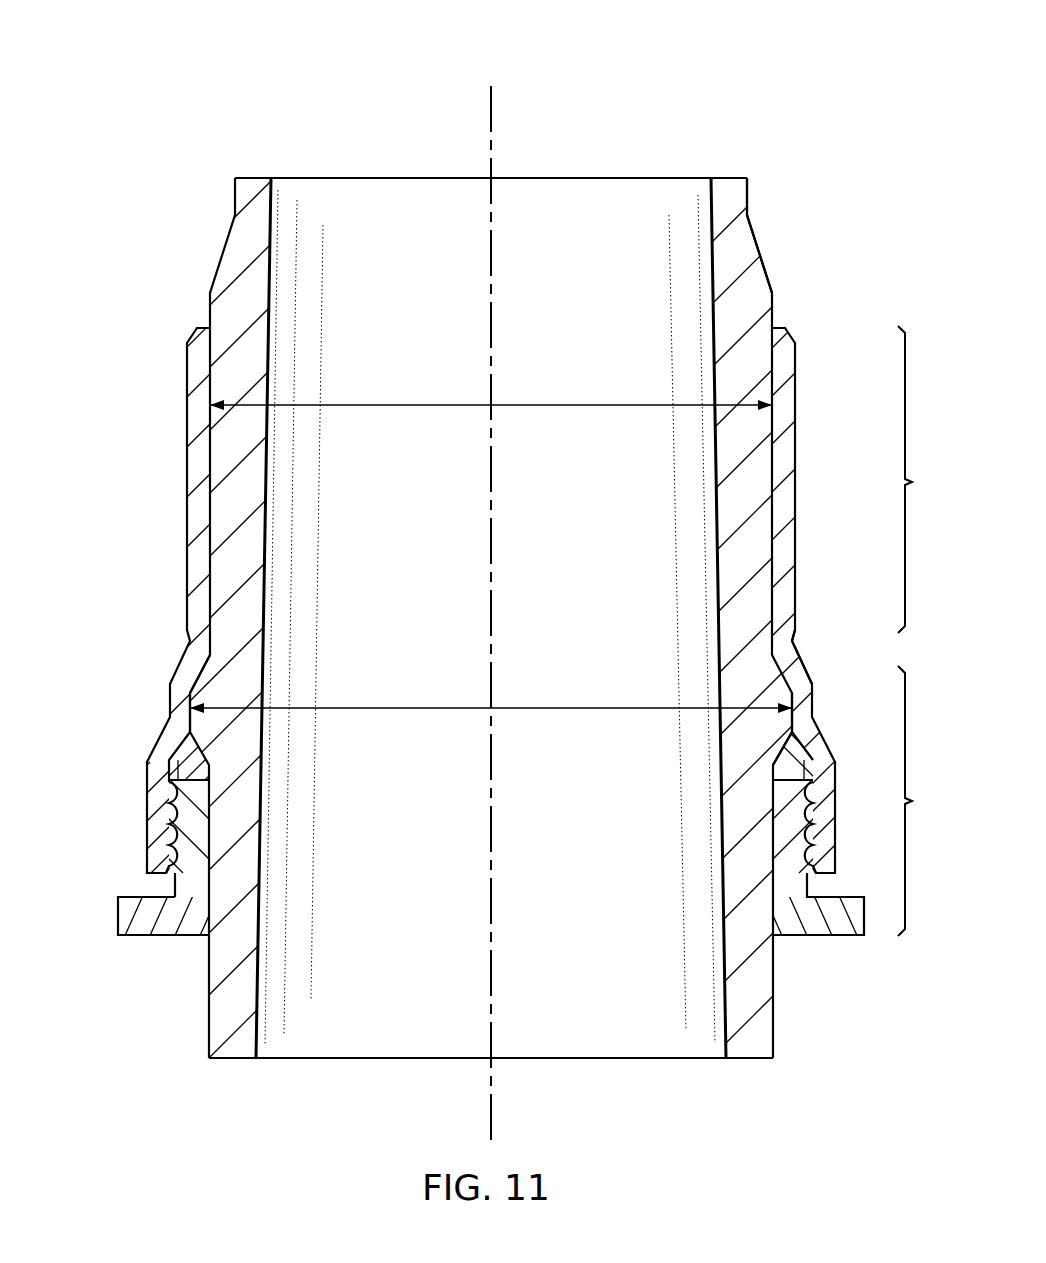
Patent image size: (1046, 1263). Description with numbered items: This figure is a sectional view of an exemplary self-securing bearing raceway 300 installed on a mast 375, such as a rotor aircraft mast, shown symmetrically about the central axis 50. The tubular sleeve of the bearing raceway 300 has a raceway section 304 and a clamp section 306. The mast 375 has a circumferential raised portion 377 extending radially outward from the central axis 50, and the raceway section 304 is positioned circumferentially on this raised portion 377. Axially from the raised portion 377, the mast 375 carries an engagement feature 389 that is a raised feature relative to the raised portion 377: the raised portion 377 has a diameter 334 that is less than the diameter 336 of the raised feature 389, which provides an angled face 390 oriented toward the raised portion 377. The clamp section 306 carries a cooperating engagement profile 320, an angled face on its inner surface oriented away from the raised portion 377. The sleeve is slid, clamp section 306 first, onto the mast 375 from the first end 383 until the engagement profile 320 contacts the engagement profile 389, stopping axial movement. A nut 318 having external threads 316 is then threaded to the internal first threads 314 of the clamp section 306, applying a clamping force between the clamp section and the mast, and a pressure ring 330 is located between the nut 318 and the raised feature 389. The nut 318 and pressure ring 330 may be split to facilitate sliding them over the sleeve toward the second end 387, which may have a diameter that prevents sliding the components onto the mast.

The self-securing bearing raceway 300 is at (294, 79).
The central axis 50 is at (489, 100).
The first end 383 is at (234, 183).
The mast 375 is at (746, 240).
The diameter 334 is at (430, 404).
The raised portion 377 is at (760, 480).
The raceway section 304 is at (929, 479).
The engagement feature 320 is at (212, 682).
The diameter 336 is at (430, 707).
The face 390 is at (799, 670).
The engagement feature 389 is at (778, 722).
The pressure ring 330 is at (183, 770).
The second threads 316 is at (168, 838).
The first threads 314 is at (210, 848).
The nut 318 is at (124, 911).
The second end 387 is at (208, 1046).
The clamp section 306 is at (929, 801).